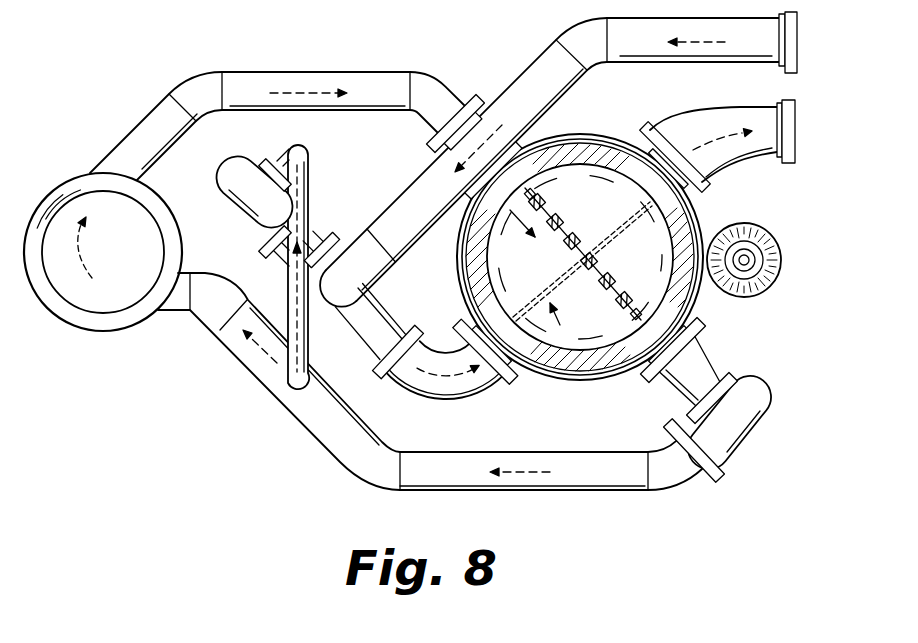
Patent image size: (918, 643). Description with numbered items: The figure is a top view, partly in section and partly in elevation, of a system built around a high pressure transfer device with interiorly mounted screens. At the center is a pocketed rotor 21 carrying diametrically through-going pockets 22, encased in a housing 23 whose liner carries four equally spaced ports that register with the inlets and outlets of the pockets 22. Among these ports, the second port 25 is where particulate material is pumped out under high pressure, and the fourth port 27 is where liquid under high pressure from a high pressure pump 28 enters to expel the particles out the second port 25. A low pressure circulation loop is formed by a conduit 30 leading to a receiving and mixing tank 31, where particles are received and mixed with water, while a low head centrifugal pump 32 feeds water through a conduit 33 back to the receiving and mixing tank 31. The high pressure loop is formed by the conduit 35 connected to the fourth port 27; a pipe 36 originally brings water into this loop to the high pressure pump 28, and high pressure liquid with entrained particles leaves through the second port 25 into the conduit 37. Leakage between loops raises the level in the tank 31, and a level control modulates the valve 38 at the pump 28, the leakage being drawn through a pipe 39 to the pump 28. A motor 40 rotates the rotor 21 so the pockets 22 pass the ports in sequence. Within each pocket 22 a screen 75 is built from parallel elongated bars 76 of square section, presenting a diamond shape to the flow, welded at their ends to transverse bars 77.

The pocketed rotor 21 is at (590, 367).
The through-going pockets 22 is at (605, 262).
The housing 23 is at (548, 377).
The second port 25 is at (689, 207).
The fourth port 27 is at (508, 368).
The high pressure pump 28 is at (243, 168).
The conduit 30 is at (196, 88).
The receiving and mixing tank 31 is at (73, 177).
The low head centrifugal pump 32 is at (752, 412).
The conduit 33 is at (300, 412).
The conduit 35 is at (456, 398).
The pipe 36 is at (421, 191).
The conduit 37 is at (728, 116).
The valve 38 is at (313, 246).
The pipe 39 is at (292, 297).
The motor 40 is at (768, 288).
The screen 75 is at (548, 266).
The elongated bars 76 is at (541, 200).
The transverse bars 77 is at (618, 287).